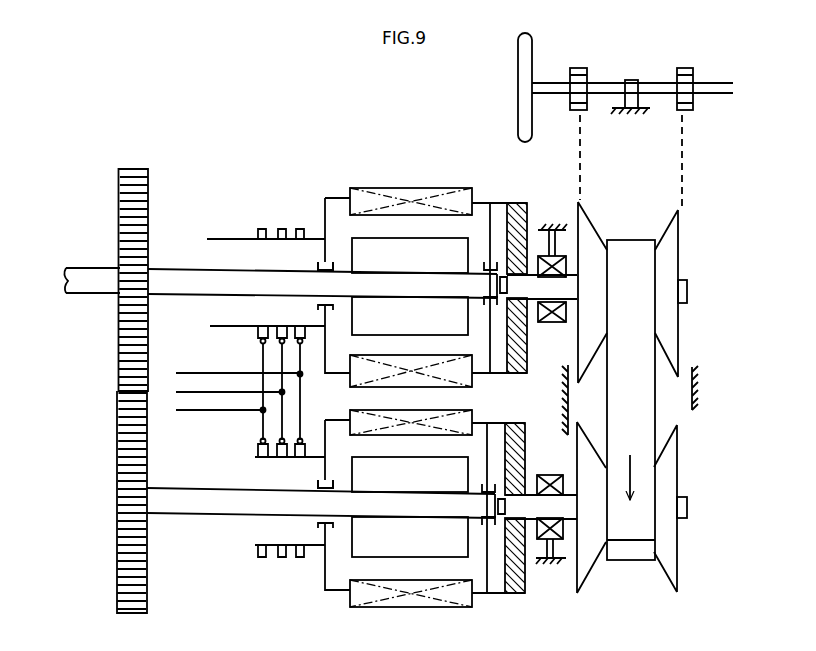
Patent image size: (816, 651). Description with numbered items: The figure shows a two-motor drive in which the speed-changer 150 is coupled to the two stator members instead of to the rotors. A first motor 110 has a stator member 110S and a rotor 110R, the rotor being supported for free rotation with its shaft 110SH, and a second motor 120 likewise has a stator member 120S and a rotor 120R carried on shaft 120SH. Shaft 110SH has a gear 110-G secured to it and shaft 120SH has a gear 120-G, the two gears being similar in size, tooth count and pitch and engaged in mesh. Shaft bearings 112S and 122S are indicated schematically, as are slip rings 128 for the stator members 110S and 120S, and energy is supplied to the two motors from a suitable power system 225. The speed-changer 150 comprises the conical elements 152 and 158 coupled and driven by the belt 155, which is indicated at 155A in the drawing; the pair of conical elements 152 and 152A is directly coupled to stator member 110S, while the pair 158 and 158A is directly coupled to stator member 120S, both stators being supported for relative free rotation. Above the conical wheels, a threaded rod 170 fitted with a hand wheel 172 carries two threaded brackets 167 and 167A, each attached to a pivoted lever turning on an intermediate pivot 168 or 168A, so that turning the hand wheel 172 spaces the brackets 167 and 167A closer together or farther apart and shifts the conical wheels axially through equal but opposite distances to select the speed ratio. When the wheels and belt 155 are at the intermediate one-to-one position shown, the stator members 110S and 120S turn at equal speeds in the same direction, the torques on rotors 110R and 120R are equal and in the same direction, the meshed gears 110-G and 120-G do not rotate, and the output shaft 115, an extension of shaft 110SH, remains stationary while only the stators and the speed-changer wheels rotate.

The first motor 110 is at (403, 274).
The stator member 110S is at (432, 190).
The rotor 110R is at (400, 252).
The rotor shaft 110SH is at (218, 285).
The gear 110-G is at (148, 190).
The shaft bearing 112S is at (318, 268).
The output shaft 115 is at (92, 268).
The second motor 120 is at (403, 515).
The stator member 120S is at (378, 410).
The rotor 120R is at (415, 540).
The rotor shaft 120SH is at (238, 500).
The gear 120-G is at (146, 598).
The shaft bearing 122S is at (318, 486).
The slip rings 128 is at (300, 342).
The power system 225 is at (217, 372).
The speed-changer 150 is at (653, 233).
The conical element 152 is at (680, 243).
The conical element 152A is at (620, 213).
The belt 155 is at (627, 552).
The direction of drum movement 155A is at (632, 465).
The conical element 158 is at (678, 553).
The conical element 158A is at (577, 580).
The threaded control bracket 167 is at (689, 68).
The threaded bracket 167A is at (574, 69).
The pivot 168 is at (695, 402).
The pivot 168A is at (566, 402).
The threaded rod 170 is at (629, 80).
The hand wheel 172 is at (516, 85).